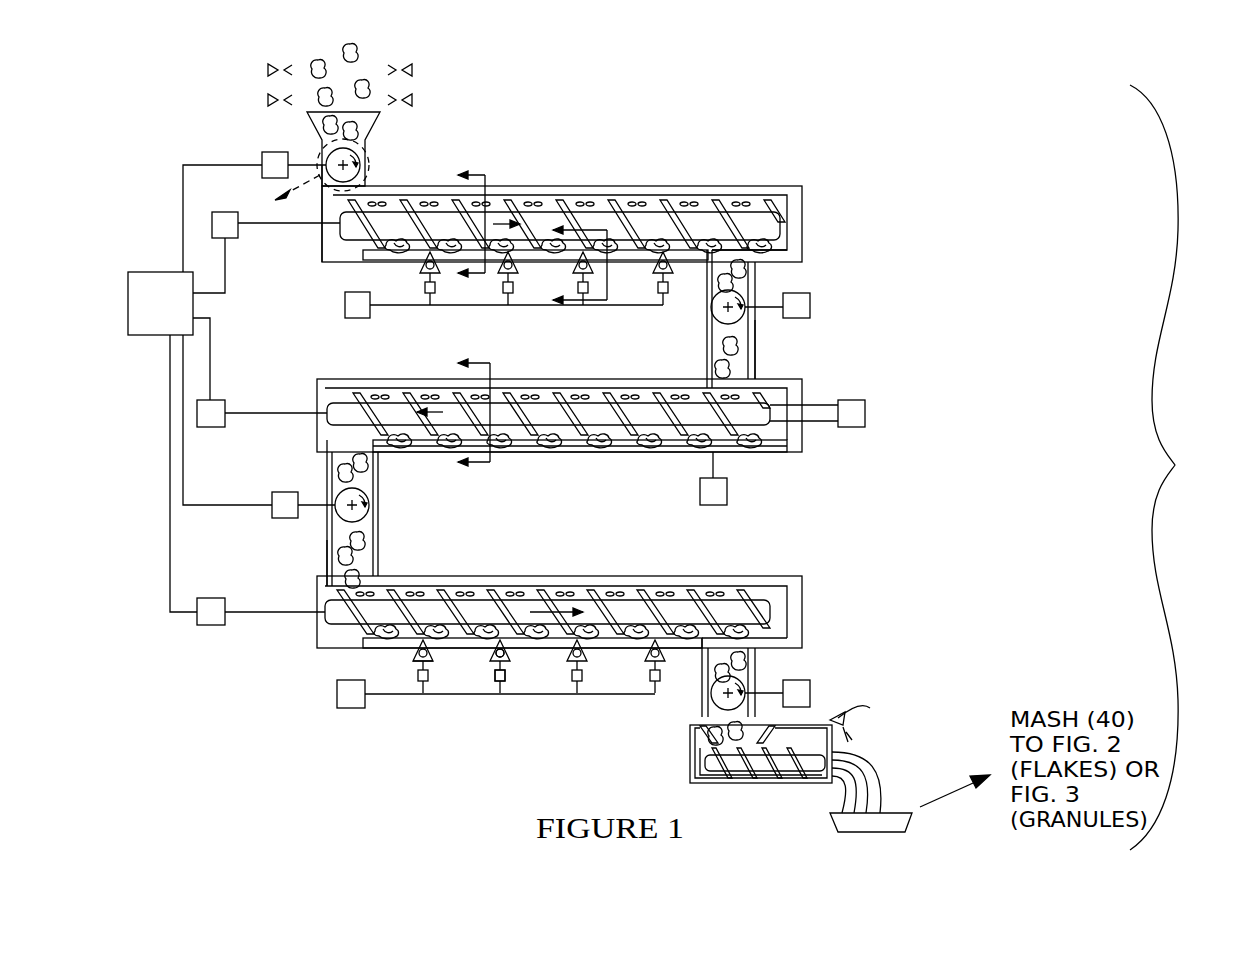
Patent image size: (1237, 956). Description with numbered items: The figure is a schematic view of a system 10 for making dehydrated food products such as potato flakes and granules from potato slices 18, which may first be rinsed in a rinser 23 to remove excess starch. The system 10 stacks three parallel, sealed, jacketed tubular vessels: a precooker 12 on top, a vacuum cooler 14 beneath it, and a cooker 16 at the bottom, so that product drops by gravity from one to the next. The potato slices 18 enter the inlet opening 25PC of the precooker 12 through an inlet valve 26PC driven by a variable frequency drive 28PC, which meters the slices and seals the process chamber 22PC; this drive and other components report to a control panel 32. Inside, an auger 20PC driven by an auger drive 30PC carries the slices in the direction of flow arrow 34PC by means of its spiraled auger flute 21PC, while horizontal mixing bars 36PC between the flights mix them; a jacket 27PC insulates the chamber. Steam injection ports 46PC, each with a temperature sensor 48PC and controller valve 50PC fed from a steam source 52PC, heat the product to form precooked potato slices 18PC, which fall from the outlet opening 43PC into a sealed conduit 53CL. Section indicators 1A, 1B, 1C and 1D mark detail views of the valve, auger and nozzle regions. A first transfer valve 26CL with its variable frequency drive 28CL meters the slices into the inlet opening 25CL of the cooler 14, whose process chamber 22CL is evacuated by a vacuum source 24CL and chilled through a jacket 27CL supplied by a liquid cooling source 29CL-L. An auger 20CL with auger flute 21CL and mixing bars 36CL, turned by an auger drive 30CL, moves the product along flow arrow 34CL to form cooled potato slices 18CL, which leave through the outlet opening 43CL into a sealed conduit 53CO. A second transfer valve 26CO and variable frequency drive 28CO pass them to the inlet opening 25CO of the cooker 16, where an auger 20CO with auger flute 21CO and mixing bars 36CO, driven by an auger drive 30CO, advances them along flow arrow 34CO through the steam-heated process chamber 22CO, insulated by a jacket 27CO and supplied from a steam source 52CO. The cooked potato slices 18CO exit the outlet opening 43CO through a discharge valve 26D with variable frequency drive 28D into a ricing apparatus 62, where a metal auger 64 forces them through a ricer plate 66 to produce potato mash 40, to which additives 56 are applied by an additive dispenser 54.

The system 10 is at (1170, 467).
The precooker 12 is at (330, 255).
The vacuum cooler 14 is at (802, 447).
The cooker 16 is at (317, 645).
The potato slices 18 is at (360, 50).
The rinser 23 is at (412, 70).
The inlet opening 25PC is at (310, 128).
The inlet valve 26PC is at (358, 150).
The variable frequency drive 28PC is at (266, 153).
The auger drive 30PC is at (226, 238).
The control panel 32 is at (140, 337).
The auger 20PC is at (616, 241).
The auger flute 21PC is at (560, 448).
The process chamber 22PC is at (797, 205).
The jacket 27PC is at (378, 262).
The flow arrow 34PC is at (522, 212).
The horizontal mixing bars 36PC is at (630, 205).
The outlet opening 43PC is at (750, 262).
The steam injection ports 46PC is at (662, 215).
The temperature sensor 48PC is at (690, 223).
The controller valve 50PC is at (714, 200).
The steam source 52PC is at (356, 320).
The precooked potato slices 18PC is at (748, 278).
The inlet opening 25CL is at (762, 301).
The first transfer valve 26CL is at (712, 307).
The variable frequency drive 28CL is at (812, 302).
The sealed conduit 53CL is at (713, 337).
The auger 20CL is at (570, 424).
The auger flute 21CL is at (548, 407).
The process chamber 22CL is at (792, 400).
The vacuum source 24CL is at (866, 413).
The jacket 27CL is at (485, 452).
The liquid cooling source 29CL-L is at (727, 492).
The auger drive 30CL is at (213, 427).
The flow arrow 34CL is at (430, 440).
The horizontal mixing bars 36CL is at (530, 393).
The outlet opening 43CL is at (345, 447).
The cooled potato slices 18CL is at (338, 472).
The inlet opening 25CO is at (348, 514).
The second transfer valve 26CO is at (370, 505).
The variable frequency drive 28CO is at (274, 518).
The sealed conduit 53CO is at (334, 540).
The auger 20CO is at (619, 627).
The auger flute 21CO is at (547, 565).
The process chamber 22CO is at (795, 600).
The jacket 27CO is at (455, 586).
The auger drive 30CO is at (210, 627).
The flow arrow 34CO is at (565, 600).
The horizontal mixing bars 36CO is at (630, 590).
The outlet opening 43CO is at (705, 650).
The steam source 52CO is at (338, 706).
The cooked potato slices 18CO is at (748, 665).
The discharge valve 26D is at (753, 697).
The variable frequency drive 28D is at (810, 693).
The ricing apparatus 62 is at (735, 781).
The metal auger 64 is at (720, 762).
The ricer plate 66 is at (821, 780).
The potato mash 40 is at (880, 770).
The additive dispenser 54 is at (870, 708).
The additives 56 is at (848, 740).
The section view indicator 1A is at (281, 198).
The section view indicator 1B is at (464, 221).
The section view indicator 1C is at (576, 265).
The section view indicator 1D is at (467, 412).